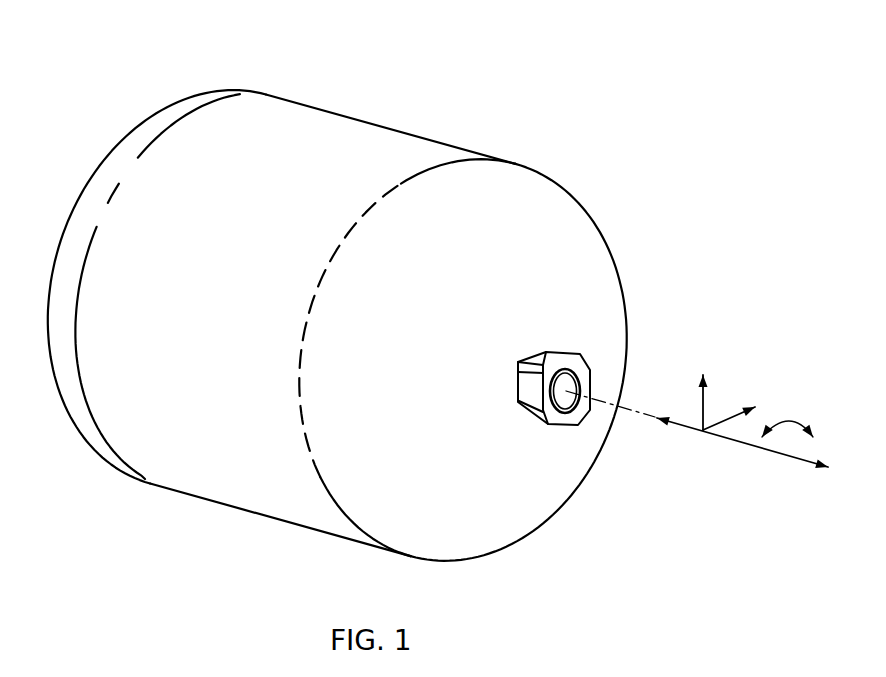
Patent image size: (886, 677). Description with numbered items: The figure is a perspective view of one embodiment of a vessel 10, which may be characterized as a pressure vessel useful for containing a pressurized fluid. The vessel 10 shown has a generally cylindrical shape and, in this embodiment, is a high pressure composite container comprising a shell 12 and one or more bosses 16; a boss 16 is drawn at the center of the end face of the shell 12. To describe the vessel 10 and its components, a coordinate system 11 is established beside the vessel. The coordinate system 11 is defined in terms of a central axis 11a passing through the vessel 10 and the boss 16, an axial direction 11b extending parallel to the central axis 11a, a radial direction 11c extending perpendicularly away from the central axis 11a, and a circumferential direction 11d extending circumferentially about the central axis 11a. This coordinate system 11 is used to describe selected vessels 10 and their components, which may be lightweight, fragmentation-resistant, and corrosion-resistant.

The vessel 10 is at (506, 113).
The shell 12 is at (348, 126).
The boss 16 is at (584, 350).
The coordinate system 11 is at (752, 372).
The central axis 11a is at (607, 403).
The axial direction 11b is at (765, 452).
The radial direction 11c is at (728, 417).
The circumferential direction 11d is at (793, 418).